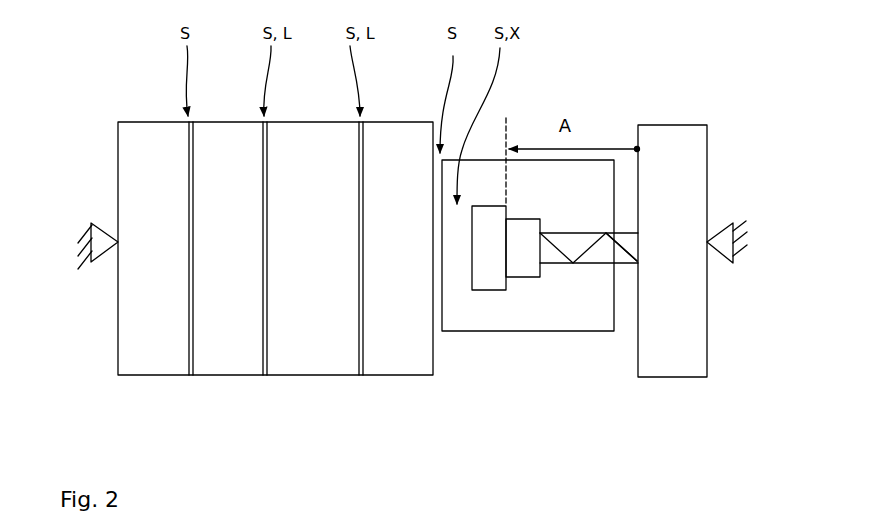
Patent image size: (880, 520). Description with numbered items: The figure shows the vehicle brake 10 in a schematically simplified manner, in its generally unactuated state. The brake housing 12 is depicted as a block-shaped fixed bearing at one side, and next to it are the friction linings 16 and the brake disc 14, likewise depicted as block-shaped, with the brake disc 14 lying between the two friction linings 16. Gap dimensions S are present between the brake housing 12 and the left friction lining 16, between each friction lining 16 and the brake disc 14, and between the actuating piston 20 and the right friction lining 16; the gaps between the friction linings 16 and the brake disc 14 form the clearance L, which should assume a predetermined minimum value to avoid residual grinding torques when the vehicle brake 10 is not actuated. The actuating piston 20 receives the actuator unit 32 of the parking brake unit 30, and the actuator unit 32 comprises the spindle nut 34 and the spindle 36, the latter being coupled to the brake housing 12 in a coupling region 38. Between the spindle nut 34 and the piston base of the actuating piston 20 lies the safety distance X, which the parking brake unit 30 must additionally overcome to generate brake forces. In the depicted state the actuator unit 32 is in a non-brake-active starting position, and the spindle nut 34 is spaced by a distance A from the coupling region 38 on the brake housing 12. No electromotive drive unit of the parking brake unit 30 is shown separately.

The vehicle brake 10 is at (589, 83).
The brake housing 12 is at (139, 325).
The brake disc 14 is at (332, 326).
The friction linings 16 is at (218, 326).
The actuating piston 20 is at (548, 332).
The parking brake unit 30 is at (646, 83).
The actuator unit 32 is at (513, 299).
The spindle nut 34 is at (488, 267).
The spindle 36 is at (598, 252).
The coupling region 38 is at (632, 278).